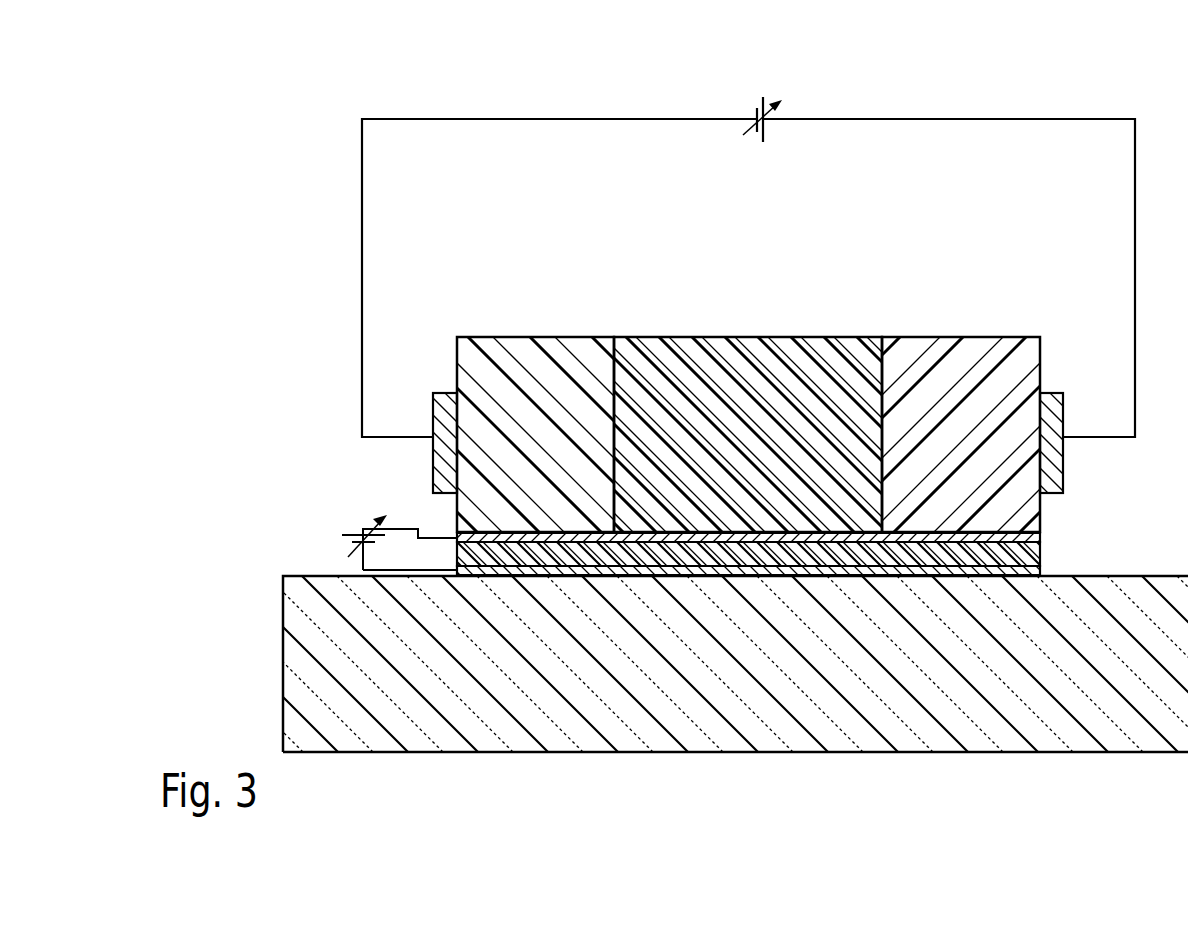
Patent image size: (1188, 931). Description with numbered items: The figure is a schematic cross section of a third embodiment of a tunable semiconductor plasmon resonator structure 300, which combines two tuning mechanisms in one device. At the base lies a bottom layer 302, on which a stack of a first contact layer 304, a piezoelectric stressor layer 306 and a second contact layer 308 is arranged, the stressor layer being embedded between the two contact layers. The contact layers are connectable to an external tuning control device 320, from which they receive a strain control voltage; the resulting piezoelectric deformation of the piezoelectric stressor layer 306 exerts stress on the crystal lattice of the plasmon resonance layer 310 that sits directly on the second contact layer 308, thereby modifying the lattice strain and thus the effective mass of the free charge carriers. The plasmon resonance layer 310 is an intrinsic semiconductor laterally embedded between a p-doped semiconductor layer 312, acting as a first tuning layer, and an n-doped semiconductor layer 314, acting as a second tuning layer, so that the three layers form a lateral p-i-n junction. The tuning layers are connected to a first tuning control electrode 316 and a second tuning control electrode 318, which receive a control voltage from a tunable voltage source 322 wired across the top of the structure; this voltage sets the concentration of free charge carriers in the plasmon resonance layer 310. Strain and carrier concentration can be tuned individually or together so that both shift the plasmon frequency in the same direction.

The tunable semiconductor plasmon resonator structure 300 is at (430, 88).
The bottom layer 302 is at (922, 690).
The first contact layer 304 is at (1042, 573).
The piezoelectric stressor layer 306 is at (1043, 550).
The second contact layer 308 is at (1042, 538).
The plasmon resonance layer 310 is at (752, 368).
The p-doped semiconductor layer 312 is at (528, 363).
The n-doped semiconductor layer 314 is at (968, 365).
The first tuning control electrode 316 is at (433, 405).
The second tuning control electrode 318 is at (1064, 403).
The external tuning control device 320 is at (362, 532).
The tunable voltage source 322 is at (755, 115).